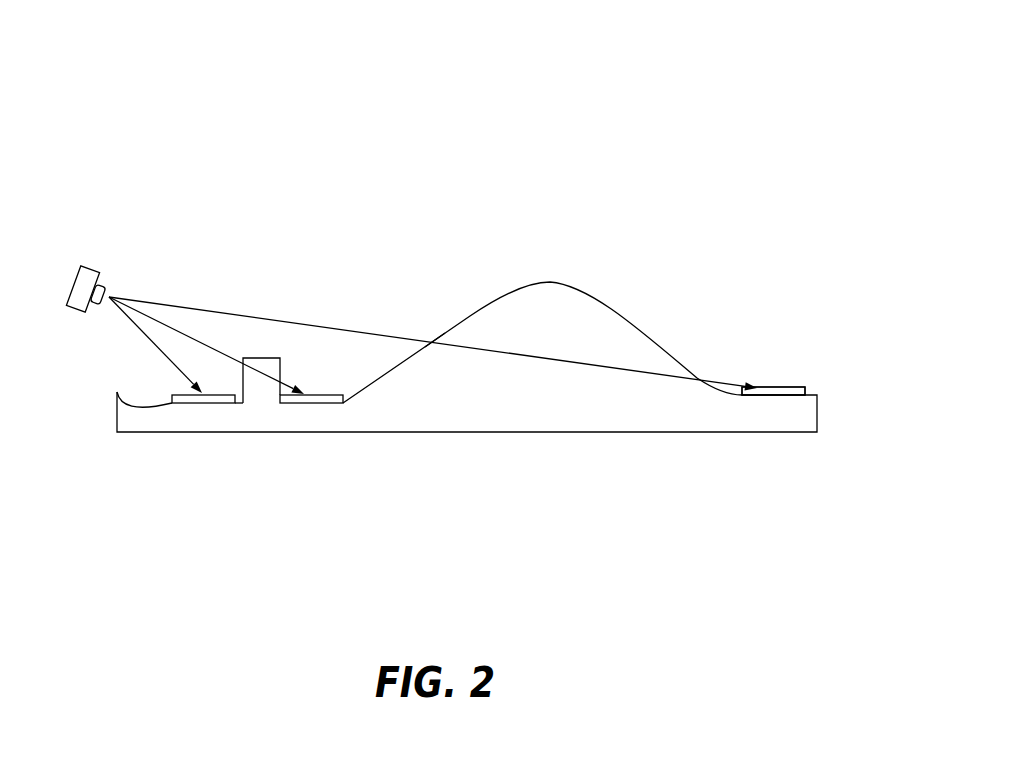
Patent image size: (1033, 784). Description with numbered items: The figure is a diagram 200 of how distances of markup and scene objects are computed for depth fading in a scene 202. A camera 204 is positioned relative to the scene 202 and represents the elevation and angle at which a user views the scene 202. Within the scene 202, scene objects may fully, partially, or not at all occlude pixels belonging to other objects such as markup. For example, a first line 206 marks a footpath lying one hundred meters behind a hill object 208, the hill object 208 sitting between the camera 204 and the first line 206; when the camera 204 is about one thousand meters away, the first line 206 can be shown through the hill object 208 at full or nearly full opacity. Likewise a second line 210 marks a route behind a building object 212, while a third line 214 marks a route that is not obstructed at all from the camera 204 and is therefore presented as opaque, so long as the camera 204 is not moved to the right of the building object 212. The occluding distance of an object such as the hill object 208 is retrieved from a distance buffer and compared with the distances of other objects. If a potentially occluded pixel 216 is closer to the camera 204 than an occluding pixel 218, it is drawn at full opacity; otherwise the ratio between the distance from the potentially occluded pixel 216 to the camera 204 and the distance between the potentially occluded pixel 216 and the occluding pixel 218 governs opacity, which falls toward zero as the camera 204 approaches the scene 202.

The diagram 200 is at (791, 70).
The scene 202 is at (633, 202).
The camera 204 is at (133, 204).
The first line 206 is at (792, 386).
The hill object 208 is at (604, 298).
The second line 210 is at (312, 404).
The building object 212 is at (279, 358).
The third line 214 is at (183, 404).
The potentially occluded pixel 216 is at (763, 407).
The occluding pixel 218 is at (435, 352).